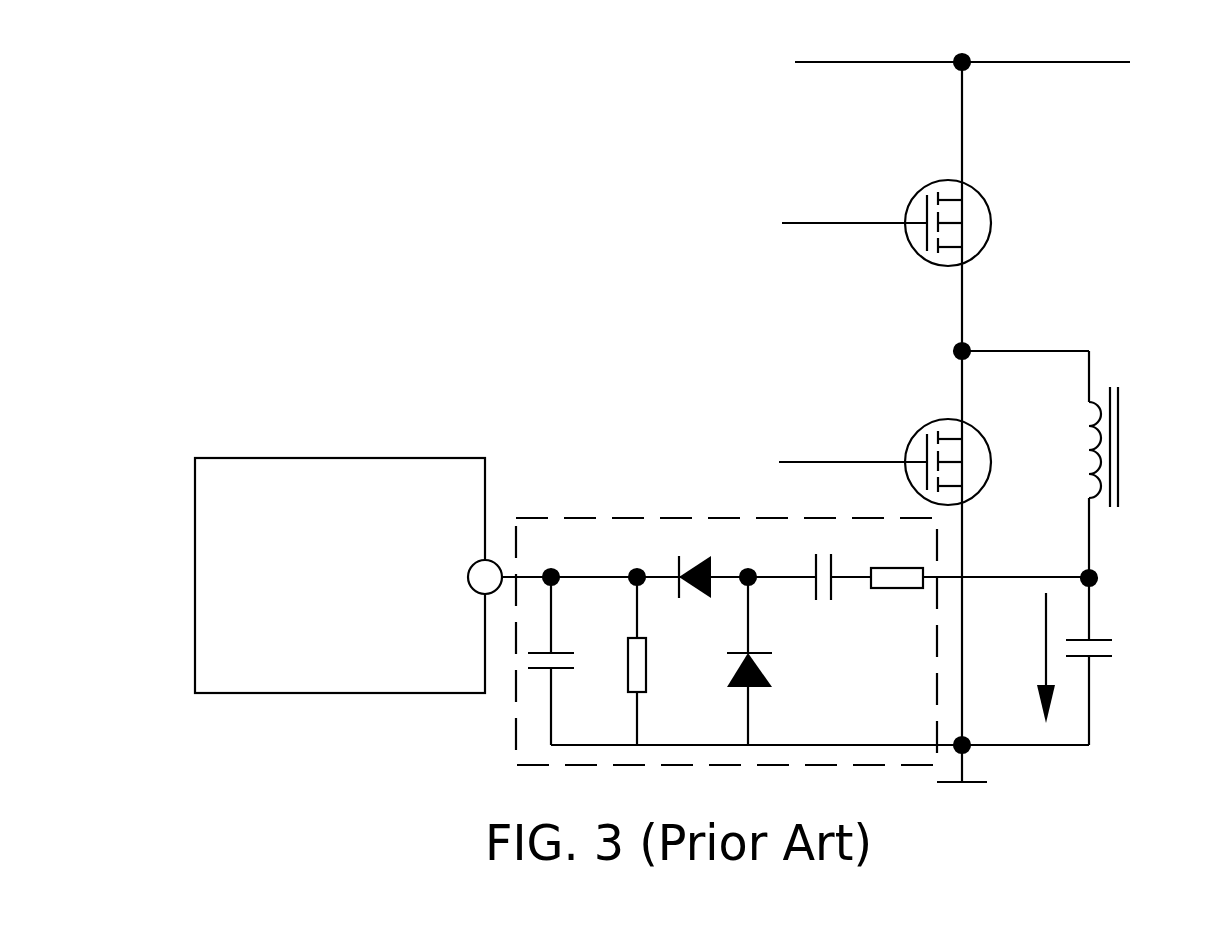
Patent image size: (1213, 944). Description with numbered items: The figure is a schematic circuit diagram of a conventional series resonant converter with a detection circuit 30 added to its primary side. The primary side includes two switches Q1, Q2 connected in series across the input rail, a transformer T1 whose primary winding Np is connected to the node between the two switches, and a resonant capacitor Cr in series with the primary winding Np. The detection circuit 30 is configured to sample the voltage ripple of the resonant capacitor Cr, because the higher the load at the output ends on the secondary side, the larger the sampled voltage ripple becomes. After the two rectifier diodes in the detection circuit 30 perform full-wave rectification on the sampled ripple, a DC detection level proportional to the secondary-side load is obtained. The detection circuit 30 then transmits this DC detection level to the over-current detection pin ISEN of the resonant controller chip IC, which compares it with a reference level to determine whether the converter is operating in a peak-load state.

The resonant controller chip IC is at (318, 496).
The over-current detection pin ISEN is at (461, 566).
The detection circuit 30 is at (574, 512).
The upper switch transistor Q1 is at (906, 223).
The lower switch transistor Q2 is at (905, 462).
The transformer T1 is at (1074, 438).
The primary winding Np is at (1080, 450).
The resonant capacitor Cr is at (1050, 657).